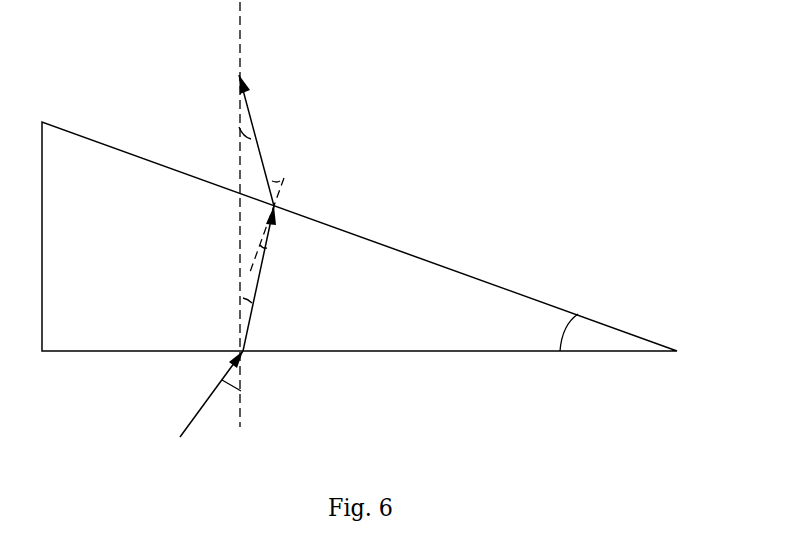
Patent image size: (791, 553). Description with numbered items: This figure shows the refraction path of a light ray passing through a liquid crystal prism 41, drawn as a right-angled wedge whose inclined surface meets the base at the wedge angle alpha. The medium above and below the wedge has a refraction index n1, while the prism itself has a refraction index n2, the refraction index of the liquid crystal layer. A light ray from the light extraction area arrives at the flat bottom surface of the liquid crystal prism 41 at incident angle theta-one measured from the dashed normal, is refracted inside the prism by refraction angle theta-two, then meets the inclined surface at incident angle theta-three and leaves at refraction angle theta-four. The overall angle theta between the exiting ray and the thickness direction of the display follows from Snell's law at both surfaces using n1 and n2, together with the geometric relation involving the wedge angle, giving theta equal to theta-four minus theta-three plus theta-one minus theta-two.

The liquid crystal prism 41 is at (375, 252).
The refraction index of medium on both sides of liquid crystal layer n1 is at (120, 238).
The refraction index of liquid crystal layer n2 is at (110, 270).